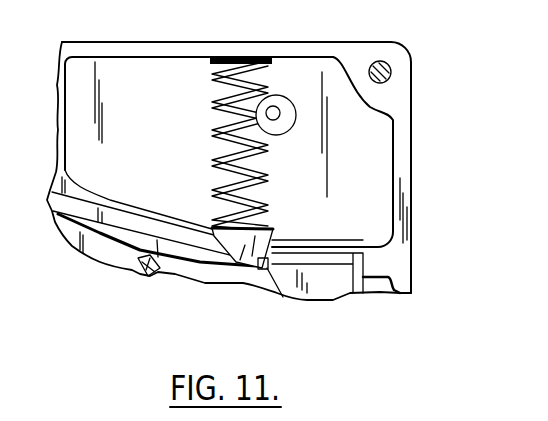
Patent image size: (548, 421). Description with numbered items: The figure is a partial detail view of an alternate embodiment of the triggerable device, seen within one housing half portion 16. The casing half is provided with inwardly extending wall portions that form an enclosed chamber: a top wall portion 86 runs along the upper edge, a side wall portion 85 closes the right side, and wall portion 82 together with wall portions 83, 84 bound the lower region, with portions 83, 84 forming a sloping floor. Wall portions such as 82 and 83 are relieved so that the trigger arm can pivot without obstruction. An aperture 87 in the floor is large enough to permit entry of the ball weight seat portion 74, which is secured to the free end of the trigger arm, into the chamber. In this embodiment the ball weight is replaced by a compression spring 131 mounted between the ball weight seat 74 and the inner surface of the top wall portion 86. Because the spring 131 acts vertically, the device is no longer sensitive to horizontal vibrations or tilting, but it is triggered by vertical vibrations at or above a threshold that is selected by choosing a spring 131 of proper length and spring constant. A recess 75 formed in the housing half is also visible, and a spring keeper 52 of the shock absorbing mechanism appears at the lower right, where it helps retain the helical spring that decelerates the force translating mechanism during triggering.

The housing half portion 16 is at (233, 41).
The top wall portion 86 is at (168, 48).
The wall portion 85 is at (405, 156).
The compression spring 131 is at (213, 130).
The recess 75 is at (277, 110).
The wall portion 82 is at (85, 178).
The wall portion 83 is at (153, 272).
The ball weight seat portion 74 is at (244, 282).
The aperture 87 is at (268, 270).
The wall portion 84 is at (316, 253).
The spring keeper 52 is at (363, 295).